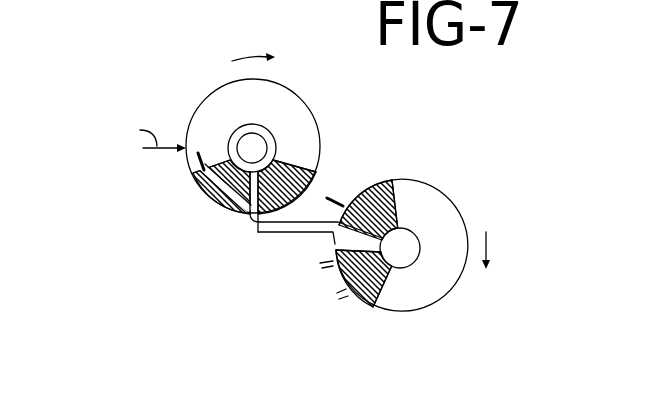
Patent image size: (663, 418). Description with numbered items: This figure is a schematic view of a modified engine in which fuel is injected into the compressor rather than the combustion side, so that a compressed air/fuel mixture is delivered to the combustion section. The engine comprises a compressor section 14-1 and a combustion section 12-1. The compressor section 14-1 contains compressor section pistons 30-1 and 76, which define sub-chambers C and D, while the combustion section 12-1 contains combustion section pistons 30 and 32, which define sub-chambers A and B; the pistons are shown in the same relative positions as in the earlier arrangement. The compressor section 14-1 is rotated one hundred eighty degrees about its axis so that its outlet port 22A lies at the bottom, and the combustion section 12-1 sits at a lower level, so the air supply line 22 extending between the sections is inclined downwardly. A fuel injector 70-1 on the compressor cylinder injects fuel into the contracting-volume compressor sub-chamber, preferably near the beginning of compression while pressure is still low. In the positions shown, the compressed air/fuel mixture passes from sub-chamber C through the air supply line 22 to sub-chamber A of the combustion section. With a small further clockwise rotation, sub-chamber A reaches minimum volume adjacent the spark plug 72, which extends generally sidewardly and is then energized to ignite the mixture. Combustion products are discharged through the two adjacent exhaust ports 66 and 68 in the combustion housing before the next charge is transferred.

The compressor section 14-1 is at (151, 87).
The combustion section 12-1 is at (507, 181).
The compressor section piston 30-1 is at (298, 162).
The combustion section piston 30 is at (383, 288).
The combustion section piston 32 is at (412, 182).
The spark plug 72 is at (343, 203).
The compressor section piston 76 is at (213, 198).
The fuel injector 70-1 is at (160, 150).
The air supply line 22 is at (275, 232).
The outlet port 22A is at (252, 220).
The exhaust port 68 is at (320, 268).
The exhaust port 66 is at (343, 297).
The sub-chamber A is at (332, 243).
The sub-chamber B is at (450, 272).
The sub-chamber C is at (232, 212).
The sub-chamber D is at (259, 121).